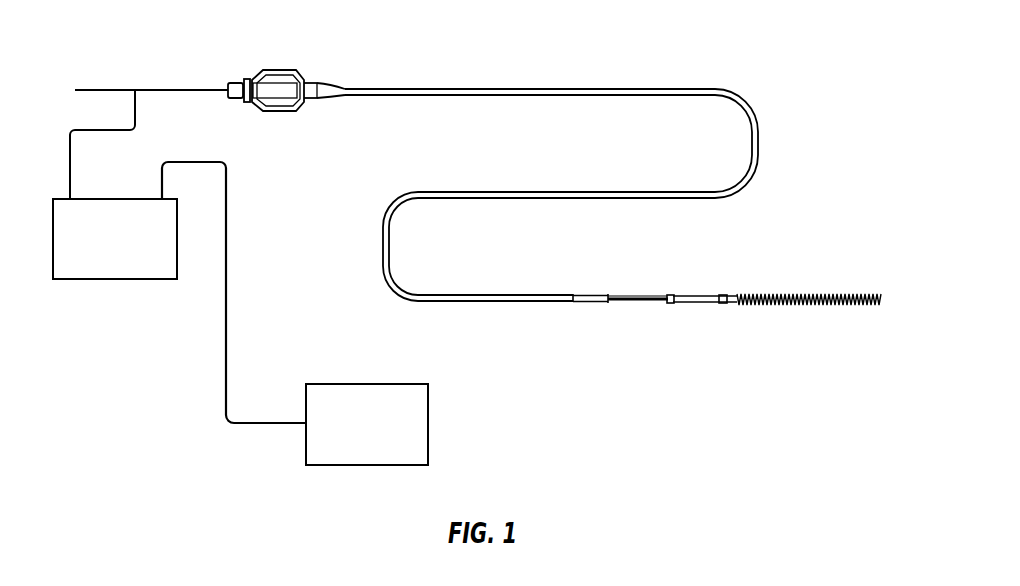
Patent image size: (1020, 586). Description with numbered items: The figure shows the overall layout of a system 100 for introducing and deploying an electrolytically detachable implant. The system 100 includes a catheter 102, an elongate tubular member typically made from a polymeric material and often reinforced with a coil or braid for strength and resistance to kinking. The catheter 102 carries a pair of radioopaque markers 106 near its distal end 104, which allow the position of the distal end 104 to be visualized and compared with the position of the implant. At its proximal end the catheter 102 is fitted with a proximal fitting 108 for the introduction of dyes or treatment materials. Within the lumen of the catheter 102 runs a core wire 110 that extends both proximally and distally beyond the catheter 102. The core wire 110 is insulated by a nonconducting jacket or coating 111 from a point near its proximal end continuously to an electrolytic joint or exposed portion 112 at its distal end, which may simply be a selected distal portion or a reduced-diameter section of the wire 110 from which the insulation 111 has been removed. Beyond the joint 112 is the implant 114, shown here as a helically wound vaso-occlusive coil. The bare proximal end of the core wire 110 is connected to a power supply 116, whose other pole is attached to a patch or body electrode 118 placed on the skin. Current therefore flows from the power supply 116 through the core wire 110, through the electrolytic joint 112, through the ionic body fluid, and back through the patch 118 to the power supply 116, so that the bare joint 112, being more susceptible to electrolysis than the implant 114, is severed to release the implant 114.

The system 100 is at (718, 51).
The catheter 102 is at (551, 174).
The distal end 104 is at (643, 274).
The radioopaque markers 106 is at (606, 303).
The proximal fitting 108 is at (293, 69).
The core wire 110 is at (369, 196).
The nonconducting jacket or coating 111 is at (740, 278).
The electrolytic joint or exposed portion 112 is at (697, 321).
The implant 114 is at (809, 321).
The power supply 116 is at (111, 249).
The patch or body electrode 118 is at (300, 313).